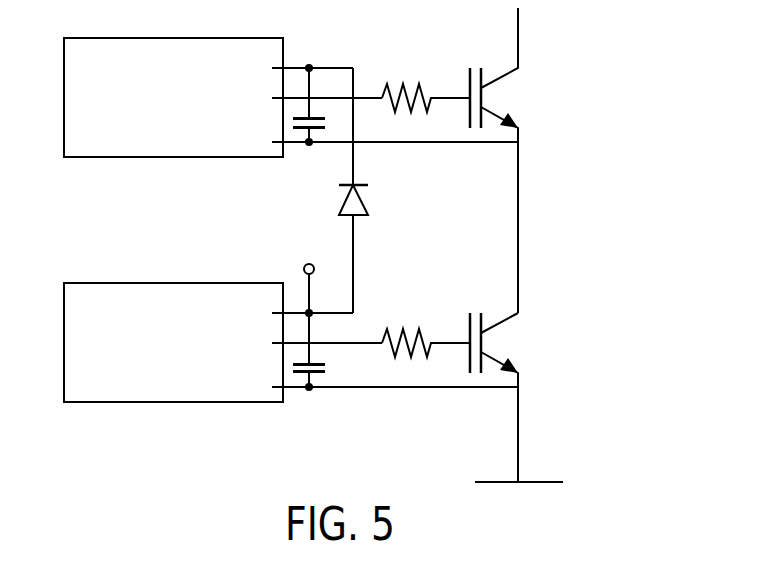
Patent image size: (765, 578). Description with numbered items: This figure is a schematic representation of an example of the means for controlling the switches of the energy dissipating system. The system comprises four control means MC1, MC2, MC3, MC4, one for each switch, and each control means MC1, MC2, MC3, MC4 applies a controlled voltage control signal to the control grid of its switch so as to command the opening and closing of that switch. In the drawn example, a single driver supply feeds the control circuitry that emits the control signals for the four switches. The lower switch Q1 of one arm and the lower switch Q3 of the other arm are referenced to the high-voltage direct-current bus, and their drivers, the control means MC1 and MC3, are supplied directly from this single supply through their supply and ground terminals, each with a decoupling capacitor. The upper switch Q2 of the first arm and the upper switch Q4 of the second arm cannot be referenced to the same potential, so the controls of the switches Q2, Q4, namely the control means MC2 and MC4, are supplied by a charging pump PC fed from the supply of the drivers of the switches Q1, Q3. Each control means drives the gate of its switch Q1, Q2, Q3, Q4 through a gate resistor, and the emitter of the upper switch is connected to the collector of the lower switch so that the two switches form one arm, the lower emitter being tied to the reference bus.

The means for controlling switch Q1 MC1 is at (291, 318).
The means for controlling switch Q2 MC2 is at (291, 97).
The means for controlling switch Q3 MC3 is at (291, 318).
The means for controlling switch Q4 MC4 is at (291, 97).
The charging pump PC is at (366, 203).
The switch Q1 is at (490, 397).
The switch Q2 is at (490, 160).
The switch Q3 is at (490, 397).
The switch Q4 is at (490, 160).